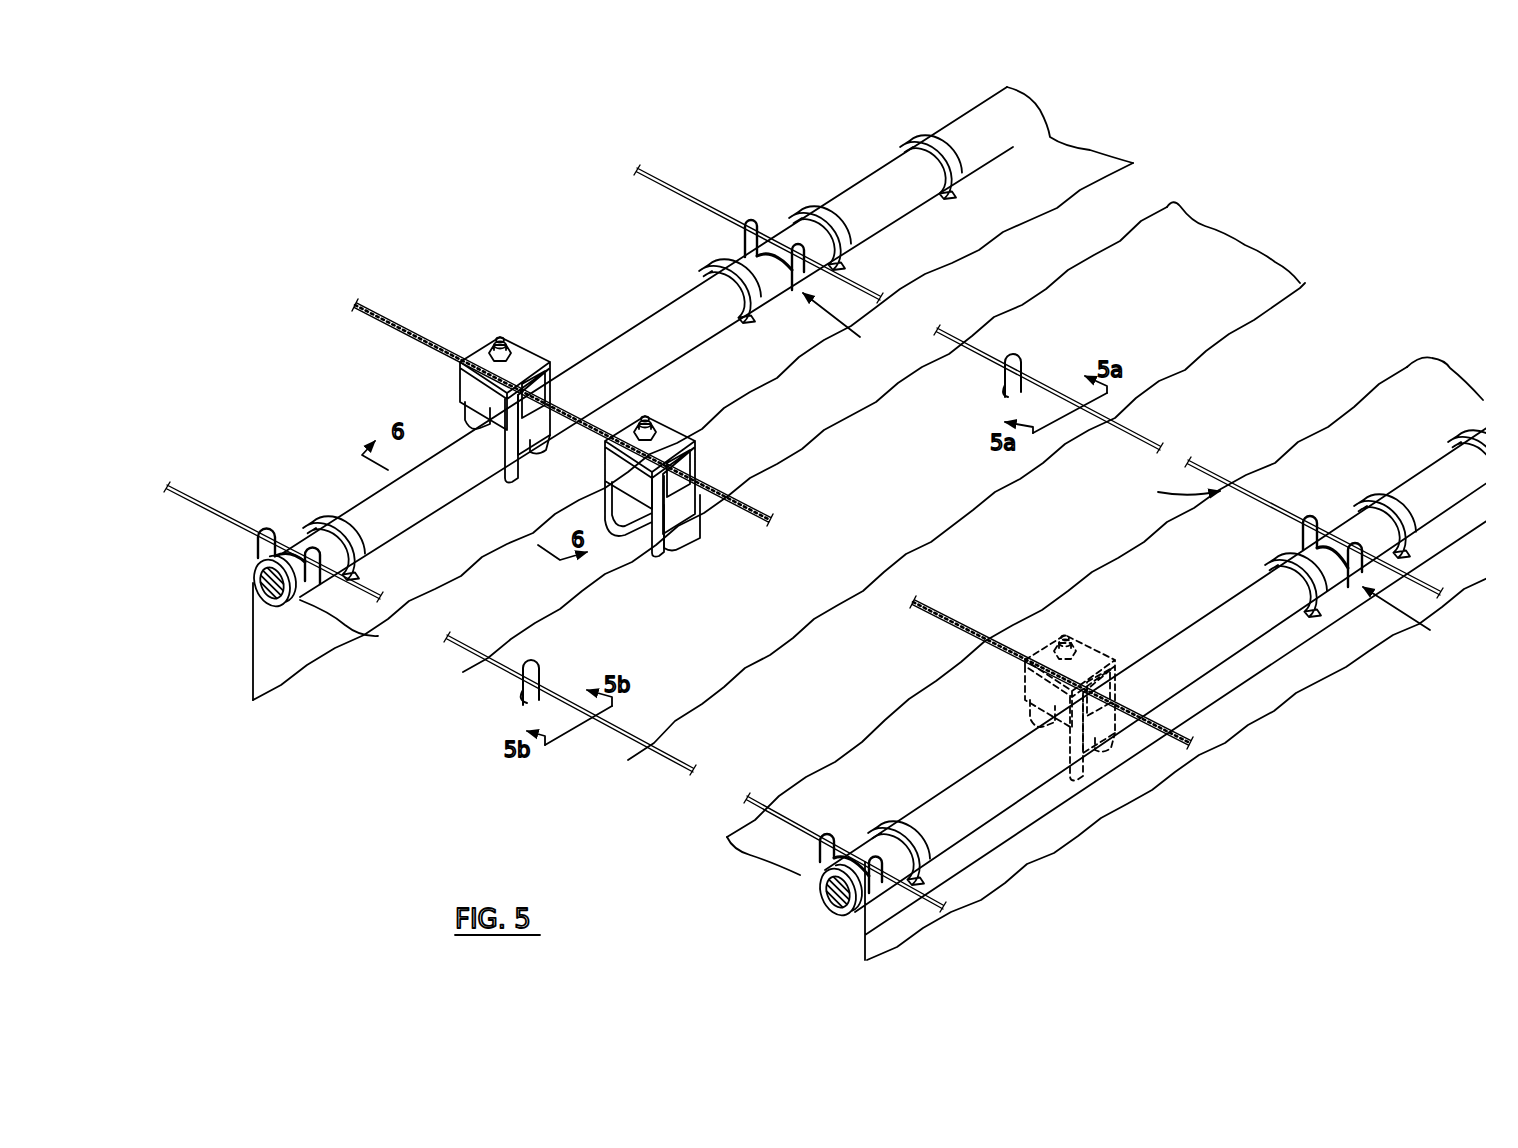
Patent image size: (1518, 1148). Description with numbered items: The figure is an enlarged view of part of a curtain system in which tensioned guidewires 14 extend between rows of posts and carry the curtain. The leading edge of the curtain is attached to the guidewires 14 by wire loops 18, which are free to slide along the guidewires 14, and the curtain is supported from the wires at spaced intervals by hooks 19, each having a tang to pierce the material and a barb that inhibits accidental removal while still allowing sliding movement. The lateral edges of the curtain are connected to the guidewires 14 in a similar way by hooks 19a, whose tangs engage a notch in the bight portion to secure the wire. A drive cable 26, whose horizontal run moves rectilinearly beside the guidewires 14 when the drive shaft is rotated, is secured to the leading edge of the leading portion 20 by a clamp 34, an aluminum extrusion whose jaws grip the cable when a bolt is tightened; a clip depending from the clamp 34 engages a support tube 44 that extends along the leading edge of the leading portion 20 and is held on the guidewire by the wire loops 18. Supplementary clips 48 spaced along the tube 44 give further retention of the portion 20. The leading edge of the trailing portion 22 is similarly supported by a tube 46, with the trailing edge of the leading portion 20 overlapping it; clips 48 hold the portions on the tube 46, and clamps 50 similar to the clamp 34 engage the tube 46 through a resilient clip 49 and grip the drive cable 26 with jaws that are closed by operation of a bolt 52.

The guidewires 14 is at (207, 502).
The wire loops 18 is at (265, 533).
The hooks 19 is at (1023, 362).
The hooks 19a is at (535, 663).
The leading portion 20 is at (693, 393).
The trailing portion 22 is at (1113, 658).
The cable 26 is at (370, 305).
The clamp 34 is at (450, 388).
The support tube 44 is at (254, 604).
The tube 46 is at (818, 908).
The supplementary clips 48 is at (322, 530).
The resilient clip 49 is at (682, 530).
The clamps 50 is at (710, 440).
The bolt 52 is at (648, 424).